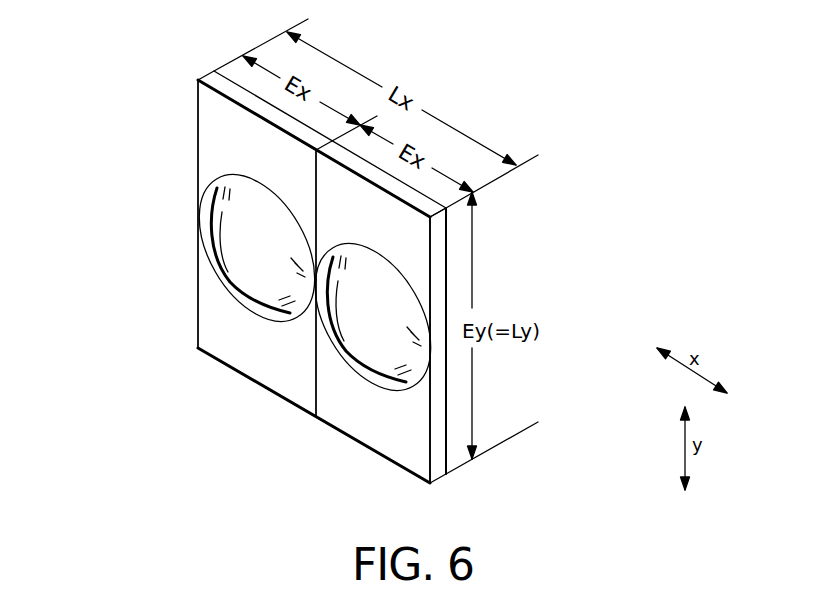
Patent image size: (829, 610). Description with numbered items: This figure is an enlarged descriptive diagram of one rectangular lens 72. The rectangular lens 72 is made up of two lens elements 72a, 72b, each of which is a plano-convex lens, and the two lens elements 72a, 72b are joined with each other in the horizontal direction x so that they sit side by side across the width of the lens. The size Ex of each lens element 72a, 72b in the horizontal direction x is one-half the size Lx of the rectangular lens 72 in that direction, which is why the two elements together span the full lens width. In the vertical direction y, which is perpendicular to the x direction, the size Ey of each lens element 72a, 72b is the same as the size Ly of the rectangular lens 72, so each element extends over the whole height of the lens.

The rectangular lens 72 is at (425, 493).
The lens element 72a is at (215, 135).
The lens element 72b is at (420, 247).